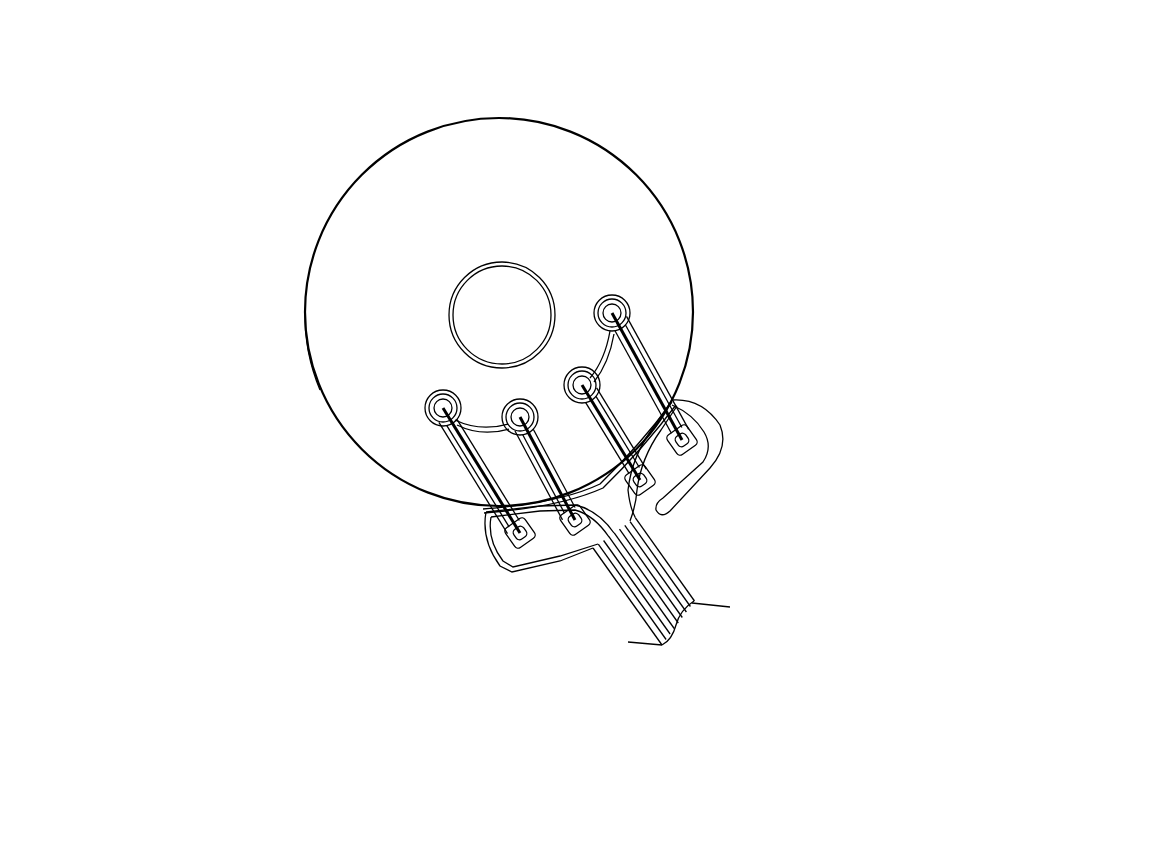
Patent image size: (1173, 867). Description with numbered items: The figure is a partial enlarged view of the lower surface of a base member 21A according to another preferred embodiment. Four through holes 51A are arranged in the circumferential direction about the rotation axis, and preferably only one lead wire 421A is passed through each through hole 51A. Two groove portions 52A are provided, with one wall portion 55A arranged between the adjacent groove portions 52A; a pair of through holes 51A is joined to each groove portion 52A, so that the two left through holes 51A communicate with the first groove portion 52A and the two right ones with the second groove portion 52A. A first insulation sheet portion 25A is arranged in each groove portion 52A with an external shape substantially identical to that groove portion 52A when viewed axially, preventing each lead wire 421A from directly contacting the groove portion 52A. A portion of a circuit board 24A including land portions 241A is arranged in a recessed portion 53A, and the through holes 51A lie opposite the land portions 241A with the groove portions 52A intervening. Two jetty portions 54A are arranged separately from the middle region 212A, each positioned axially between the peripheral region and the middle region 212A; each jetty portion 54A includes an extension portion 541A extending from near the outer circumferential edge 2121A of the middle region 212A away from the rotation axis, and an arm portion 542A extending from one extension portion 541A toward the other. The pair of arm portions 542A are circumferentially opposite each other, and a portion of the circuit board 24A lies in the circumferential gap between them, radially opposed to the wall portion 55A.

The base member 21A is at (742, 112).
The middle region 212A is at (628, 213).
The outer circumferential edge 2121A is at (313, 385).
The through hole 51A is at (603, 300).
The wall portion 55A is at (567, 440).
The groove portion 52A is at (683, 403).
The extension portion 541A is at (707, 425).
The arm portion 542A is at (707, 467).
The jetty portion 54A is at (917, 412).
The first insulation sheet portion 25A is at (490, 457).
The lead wire 421A is at (485, 490).
The land portion 241A is at (497, 553).
The recessed portion 53A is at (567, 557).
The circuit board 24A is at (657, 573).